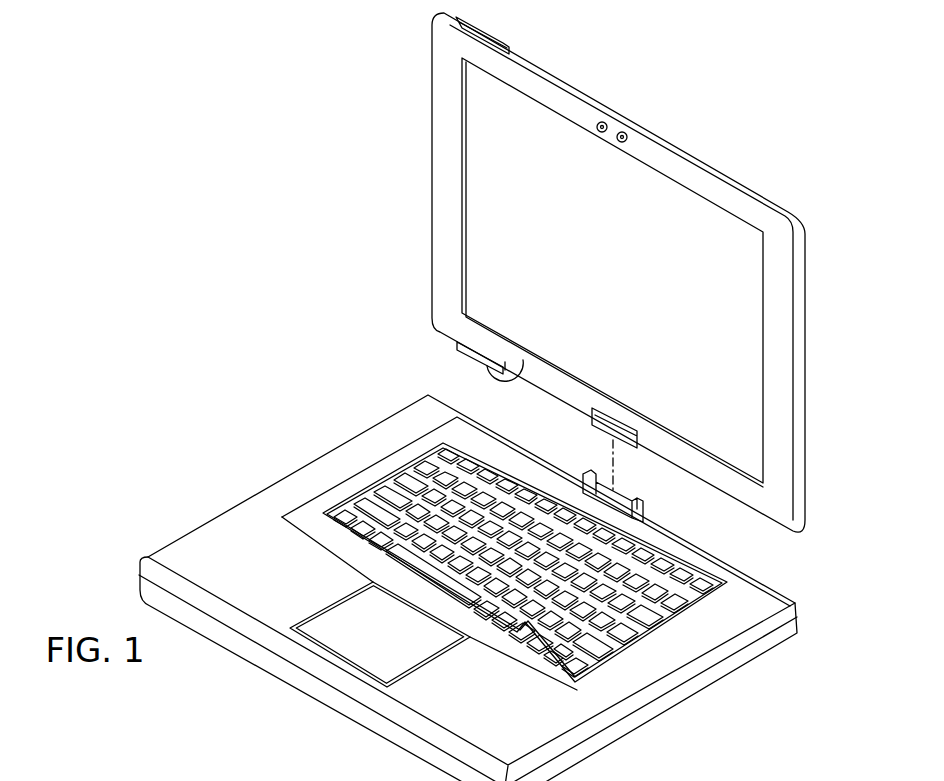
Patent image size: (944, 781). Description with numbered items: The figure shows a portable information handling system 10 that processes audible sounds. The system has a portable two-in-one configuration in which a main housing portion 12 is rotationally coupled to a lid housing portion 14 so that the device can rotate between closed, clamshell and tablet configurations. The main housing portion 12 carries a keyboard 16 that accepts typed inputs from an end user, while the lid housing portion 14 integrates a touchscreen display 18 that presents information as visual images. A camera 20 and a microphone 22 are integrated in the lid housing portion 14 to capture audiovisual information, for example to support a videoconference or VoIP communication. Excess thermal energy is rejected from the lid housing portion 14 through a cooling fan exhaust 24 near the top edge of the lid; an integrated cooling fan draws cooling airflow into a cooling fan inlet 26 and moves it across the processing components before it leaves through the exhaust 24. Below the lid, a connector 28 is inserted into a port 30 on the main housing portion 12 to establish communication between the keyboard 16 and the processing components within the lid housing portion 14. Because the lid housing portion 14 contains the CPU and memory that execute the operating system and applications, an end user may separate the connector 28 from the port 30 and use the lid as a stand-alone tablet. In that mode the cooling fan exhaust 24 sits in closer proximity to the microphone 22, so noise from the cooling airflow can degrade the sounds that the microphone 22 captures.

The information handling system 10 is at (158, 211).
The main housing portion 12 is at (256, 496).
The lid housing portion 14 is at (432, 235).
The keyboard 16 is at (383, 477).
The touchscreen display 18 is at (477, 133).
The camera 20 is at (598, 121).
The microphone 22 is at (627, 132).
The cooling fan exhaust 24 is at (460, 28).
The cooling fan inlet 26 is at (522, 372).
The connector 28 is at (603, 418).
The port 30 is at (625, 504).